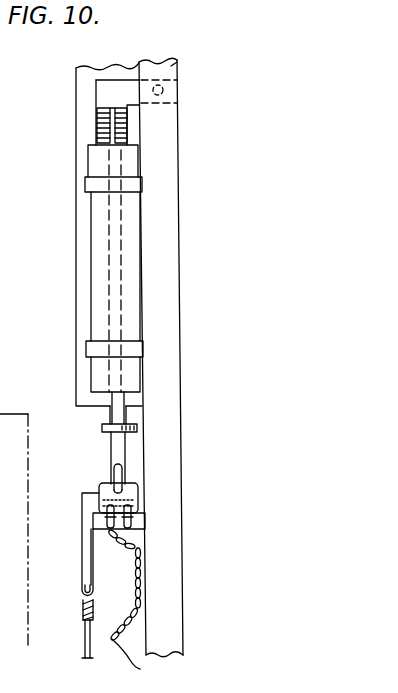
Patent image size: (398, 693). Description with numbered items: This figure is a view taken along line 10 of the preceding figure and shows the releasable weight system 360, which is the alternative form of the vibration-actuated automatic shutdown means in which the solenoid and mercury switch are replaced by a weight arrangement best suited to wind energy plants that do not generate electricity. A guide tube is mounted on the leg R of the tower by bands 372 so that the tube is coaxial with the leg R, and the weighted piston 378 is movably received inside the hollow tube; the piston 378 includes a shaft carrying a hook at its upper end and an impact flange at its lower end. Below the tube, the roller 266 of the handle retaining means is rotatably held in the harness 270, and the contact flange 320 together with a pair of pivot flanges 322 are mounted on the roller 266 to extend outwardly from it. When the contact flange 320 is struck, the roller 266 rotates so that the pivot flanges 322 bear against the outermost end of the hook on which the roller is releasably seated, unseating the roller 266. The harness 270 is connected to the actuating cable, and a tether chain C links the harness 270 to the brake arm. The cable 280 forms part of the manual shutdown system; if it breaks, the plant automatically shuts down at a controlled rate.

The line 10— 10 is at (42, 643).
The releasable weight system 360 is at (78, 292).
The weighted piston 378 is at (112, 302).
The bands 372 is at (125, 186).
The contact flange 320 is at (113, 477).
The roller 266 is at (130, 500).
The pivot flanges 322 is at (133, 522).
The harness 270 is at (84, 536).
The cable 280 is at (88, 640).
The leg R is at (170, 636).
The tether chain C is at (128, 611).